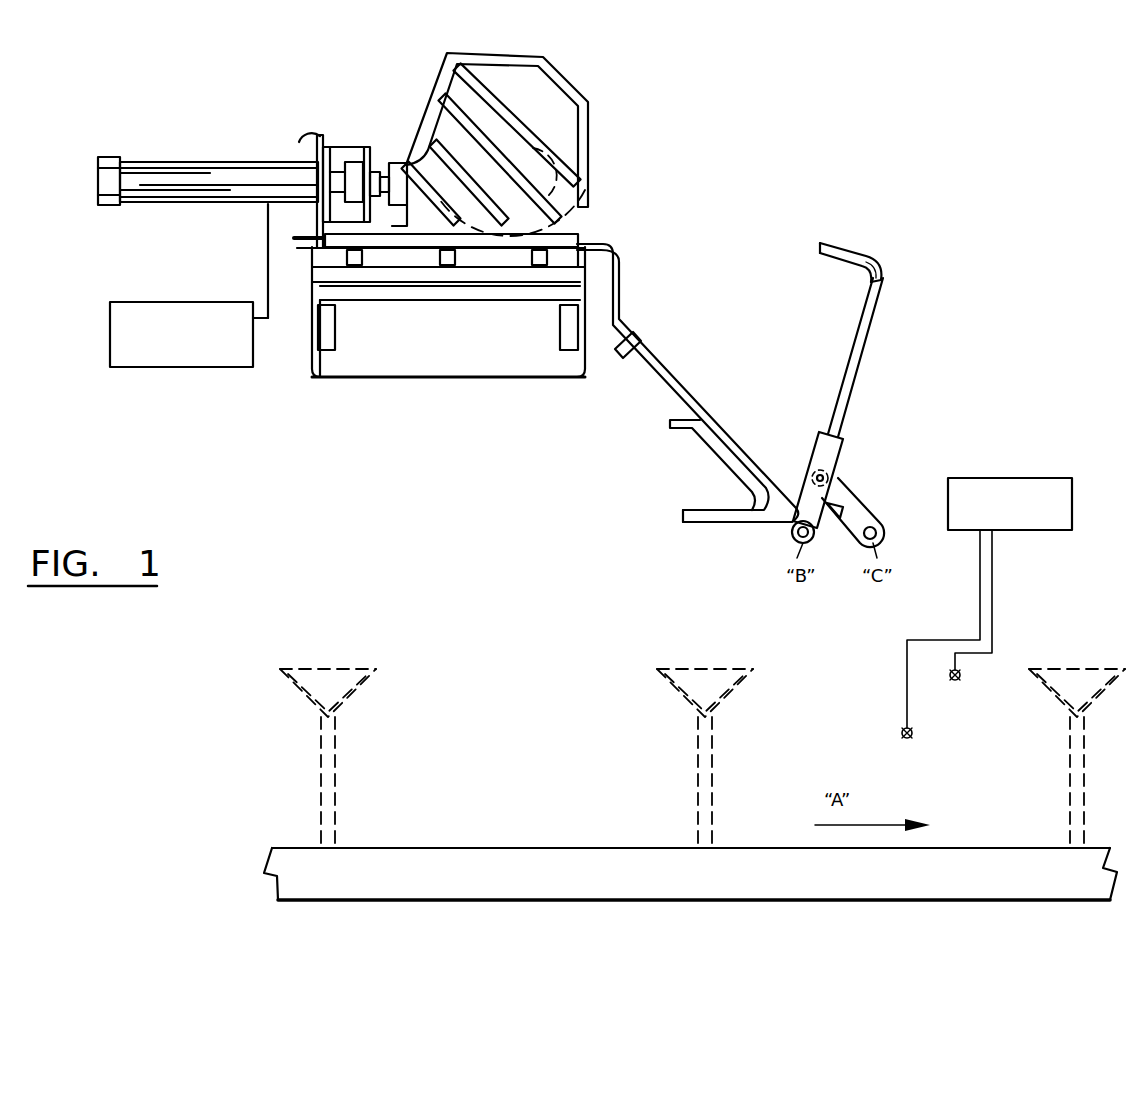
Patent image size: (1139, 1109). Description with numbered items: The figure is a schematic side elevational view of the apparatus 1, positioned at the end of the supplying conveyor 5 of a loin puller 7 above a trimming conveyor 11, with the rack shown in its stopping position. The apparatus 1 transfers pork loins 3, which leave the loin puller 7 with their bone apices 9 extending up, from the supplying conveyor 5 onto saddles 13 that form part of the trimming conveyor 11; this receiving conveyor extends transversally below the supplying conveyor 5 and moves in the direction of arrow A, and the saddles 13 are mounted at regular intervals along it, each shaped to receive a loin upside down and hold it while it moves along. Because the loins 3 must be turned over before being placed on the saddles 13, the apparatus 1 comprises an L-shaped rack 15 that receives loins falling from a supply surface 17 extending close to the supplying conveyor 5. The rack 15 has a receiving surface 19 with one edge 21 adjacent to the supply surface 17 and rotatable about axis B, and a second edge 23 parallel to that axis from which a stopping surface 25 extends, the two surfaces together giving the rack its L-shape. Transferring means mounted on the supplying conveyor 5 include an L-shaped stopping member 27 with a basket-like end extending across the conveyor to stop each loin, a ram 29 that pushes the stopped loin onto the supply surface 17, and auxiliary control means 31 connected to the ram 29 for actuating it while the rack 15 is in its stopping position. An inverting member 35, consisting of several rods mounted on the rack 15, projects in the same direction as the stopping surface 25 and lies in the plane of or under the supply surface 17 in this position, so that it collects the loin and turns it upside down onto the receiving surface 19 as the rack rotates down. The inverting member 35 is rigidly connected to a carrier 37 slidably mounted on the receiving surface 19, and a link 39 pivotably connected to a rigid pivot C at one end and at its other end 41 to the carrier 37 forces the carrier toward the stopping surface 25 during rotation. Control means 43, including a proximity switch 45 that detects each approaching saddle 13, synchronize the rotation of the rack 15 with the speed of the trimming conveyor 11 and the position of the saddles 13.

The apparatus 1 is at (622, 490).
The pork loins 3 is at (537, 152).
The supplying conveyor 5 is at (421, 255).
The loin puller 7 is at (348, 380).
The bone apices 9 is at (494, 138).
The trimming conveyor 11 is at (545, 843).
The saddles 13 is at (372, 668).
The L-shaped rack 15 is at (845, 349).
The supply surface 17 is at (667, 371).
The receiving surface 19 is at (867, 363).
The edge 21 is at (790, 534).
The second edge 23 is at (868, 272).
The stopping surface 25 is at (838, 243).
The L-shaped stopping member 27 is at (594, 97).
The ram 29 is at (163, 165).
The auxiliary control means 31 is at (178, 368).
The inverting member 35 is at (678, 428).
The carrier 37 is at (843, 453).
The link 39 is at (858, 504).
The end of link 41 is at (811, 473).
The control means 43 is at (1032, 478).
The proximity switch 45 is at (945, 718).